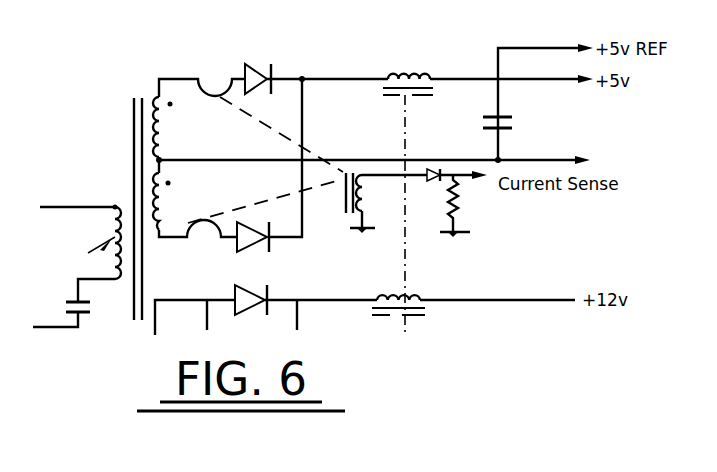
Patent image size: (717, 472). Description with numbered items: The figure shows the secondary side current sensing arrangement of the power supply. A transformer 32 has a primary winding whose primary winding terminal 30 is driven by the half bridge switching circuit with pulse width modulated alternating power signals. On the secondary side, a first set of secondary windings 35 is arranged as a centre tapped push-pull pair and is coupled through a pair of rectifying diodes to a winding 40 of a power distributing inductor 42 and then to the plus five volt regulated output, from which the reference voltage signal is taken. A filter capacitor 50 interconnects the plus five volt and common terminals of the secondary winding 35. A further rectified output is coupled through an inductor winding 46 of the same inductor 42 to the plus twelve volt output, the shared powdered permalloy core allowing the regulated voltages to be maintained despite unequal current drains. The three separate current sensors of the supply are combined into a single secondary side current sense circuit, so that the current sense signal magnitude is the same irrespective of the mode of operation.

The primary winding terminal 30 is at (115, 205).
The transformer 32 is at (130, 194).
The first set of secondary windings 35 is at (165, 155).
The winding 40 is at (430, 68).
The power distributing inductor 42 is at (407, 120).
The inductor winding 46 is at (420, 292).
The filter capacitor 50 is at (496, 113).